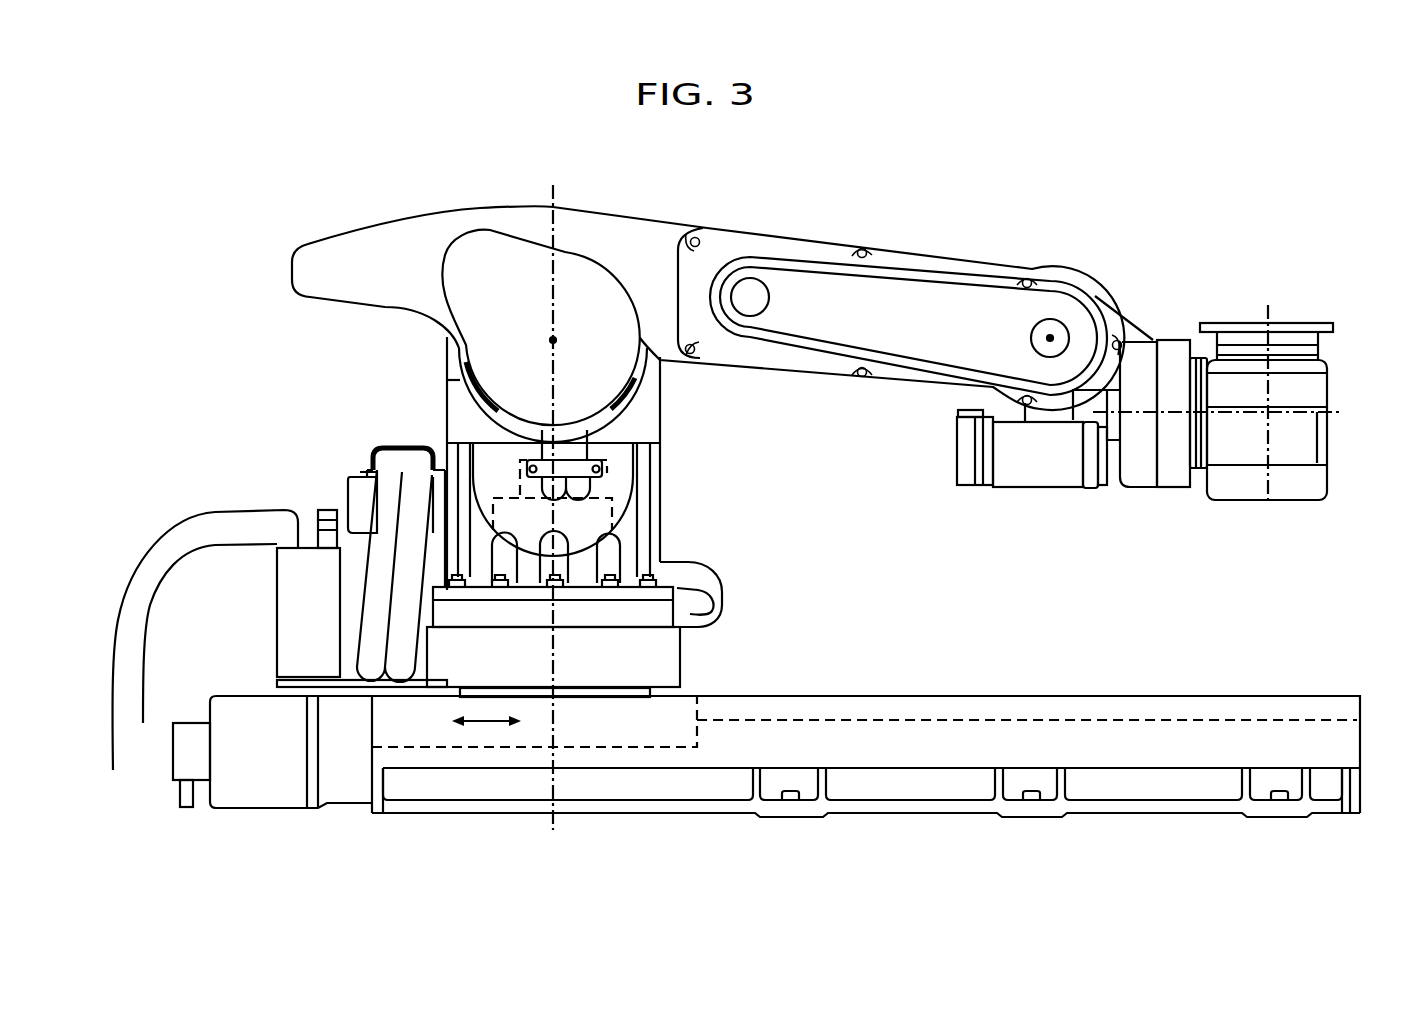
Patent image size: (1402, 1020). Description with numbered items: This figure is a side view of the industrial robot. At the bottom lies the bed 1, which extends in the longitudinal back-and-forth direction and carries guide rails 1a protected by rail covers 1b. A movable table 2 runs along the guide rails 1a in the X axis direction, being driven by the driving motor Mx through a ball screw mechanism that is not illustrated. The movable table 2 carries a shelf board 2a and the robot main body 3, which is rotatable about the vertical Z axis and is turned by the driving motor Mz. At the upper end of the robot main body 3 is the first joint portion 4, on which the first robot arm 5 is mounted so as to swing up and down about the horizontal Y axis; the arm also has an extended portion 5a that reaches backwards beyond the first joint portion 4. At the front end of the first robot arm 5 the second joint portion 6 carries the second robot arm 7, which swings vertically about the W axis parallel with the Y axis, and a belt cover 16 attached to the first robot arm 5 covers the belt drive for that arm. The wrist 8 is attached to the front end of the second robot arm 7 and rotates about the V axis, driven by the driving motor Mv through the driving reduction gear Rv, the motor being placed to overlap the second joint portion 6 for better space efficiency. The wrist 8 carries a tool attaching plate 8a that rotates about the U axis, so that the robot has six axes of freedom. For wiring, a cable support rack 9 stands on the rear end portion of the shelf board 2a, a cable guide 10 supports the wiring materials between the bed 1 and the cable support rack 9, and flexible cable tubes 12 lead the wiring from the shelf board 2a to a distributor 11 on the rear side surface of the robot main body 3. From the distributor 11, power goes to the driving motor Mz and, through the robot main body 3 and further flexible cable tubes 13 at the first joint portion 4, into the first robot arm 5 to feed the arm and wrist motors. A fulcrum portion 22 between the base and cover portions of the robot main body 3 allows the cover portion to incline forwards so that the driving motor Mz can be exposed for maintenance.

The bed 1 is at (927, 817).
The guide rails 1a is at (985, 720).
The rail covers 1b is at (1127, 695).
The movable table 2 is at (687, 717).
The shelf board 2a is at (410, 690).
The robot main body 3 is at (667, 530).
The first joint portion 4 is at (560, 332).
The first robot arm 5 is at (808, 244).
The extended portion 5a is at (367, 221).
The second joint portion 6 is at (1062, 315).
The second robot arm 7 is at (1137, 468).
The wrist 8 is at (1308, 432).
The tool attaching plate 8a is at (1290, 325).
The cable support rack 9 is at (304, 548).
The cable guide 10 is at (225, 523).
The distributor 11 is at (357, 477).
The flexible cable tubes 12 is at (417, 460).
The flexible cable tubes 13 is at (580, 452).
The belt cover 16 is at (923, 353).
The fulcrum portion 22 is at (728, 582).
The driving motor Mx is at (283, 792).
The driving motor Mz is at (650, 494).
The driving motor Mv is at (1027, 467).
The driving reduction gear Rv is at (1173, 468).
The X axis X is at (493, 725).
The Y axis Y is at (551, 342).
The Z axis Z is at (550, 197).
The U axis U is at (1262, 312).
The V axis V is at (1300, 412).
The W axis W is at (1073, 340).